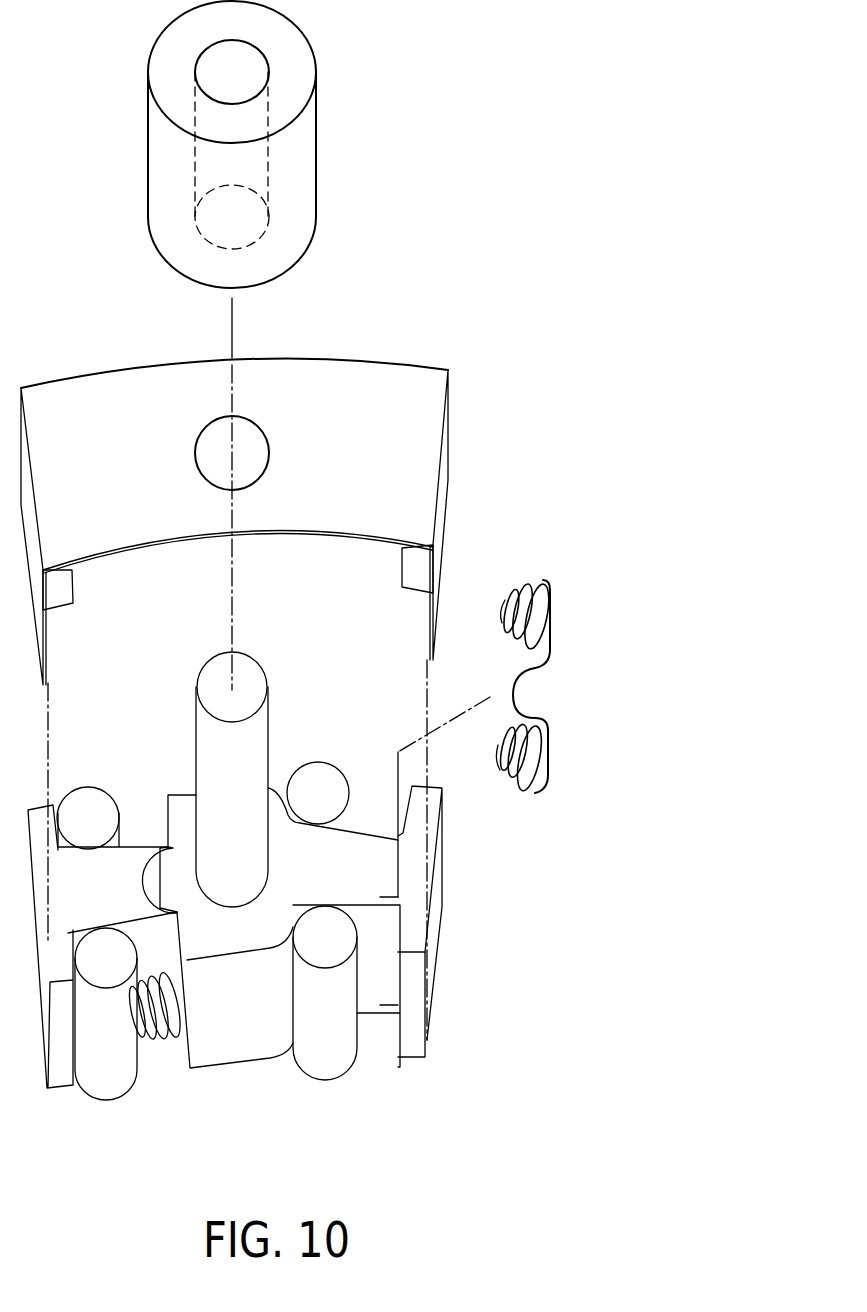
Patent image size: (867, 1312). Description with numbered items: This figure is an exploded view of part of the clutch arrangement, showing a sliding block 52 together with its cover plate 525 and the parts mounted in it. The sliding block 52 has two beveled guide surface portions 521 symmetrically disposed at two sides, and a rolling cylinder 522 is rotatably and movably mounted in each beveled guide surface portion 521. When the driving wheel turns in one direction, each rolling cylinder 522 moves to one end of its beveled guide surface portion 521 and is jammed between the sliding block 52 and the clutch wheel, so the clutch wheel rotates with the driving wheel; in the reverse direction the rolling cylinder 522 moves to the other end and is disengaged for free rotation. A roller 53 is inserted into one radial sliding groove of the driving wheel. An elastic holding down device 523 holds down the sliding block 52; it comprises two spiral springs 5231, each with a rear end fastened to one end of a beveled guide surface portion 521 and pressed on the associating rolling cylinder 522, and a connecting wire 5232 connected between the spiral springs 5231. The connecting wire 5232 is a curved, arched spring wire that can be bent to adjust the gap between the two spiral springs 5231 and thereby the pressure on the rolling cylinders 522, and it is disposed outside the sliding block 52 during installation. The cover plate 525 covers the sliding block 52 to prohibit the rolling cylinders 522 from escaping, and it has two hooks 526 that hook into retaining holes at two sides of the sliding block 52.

The roller 53 is at (290, 163).
The cover plate 525 is at (368, 405).
The hooks 526 is at (60, 593).
The sliding block 52 is at (281, 910).
The beveled guide surface portion 521 is at (375, 982).
The rolling cylinder 522 is at (103, 1063).
The elastic holding down device 523 is at (586, 684).
The spiral springs 5231 is at (513, 600).
The connecting wire 5232 is at (523, 668).